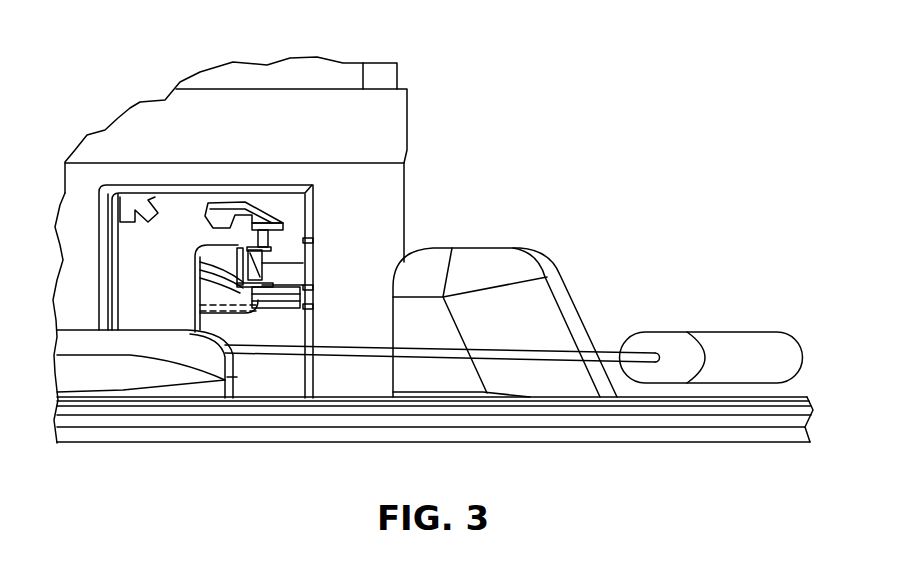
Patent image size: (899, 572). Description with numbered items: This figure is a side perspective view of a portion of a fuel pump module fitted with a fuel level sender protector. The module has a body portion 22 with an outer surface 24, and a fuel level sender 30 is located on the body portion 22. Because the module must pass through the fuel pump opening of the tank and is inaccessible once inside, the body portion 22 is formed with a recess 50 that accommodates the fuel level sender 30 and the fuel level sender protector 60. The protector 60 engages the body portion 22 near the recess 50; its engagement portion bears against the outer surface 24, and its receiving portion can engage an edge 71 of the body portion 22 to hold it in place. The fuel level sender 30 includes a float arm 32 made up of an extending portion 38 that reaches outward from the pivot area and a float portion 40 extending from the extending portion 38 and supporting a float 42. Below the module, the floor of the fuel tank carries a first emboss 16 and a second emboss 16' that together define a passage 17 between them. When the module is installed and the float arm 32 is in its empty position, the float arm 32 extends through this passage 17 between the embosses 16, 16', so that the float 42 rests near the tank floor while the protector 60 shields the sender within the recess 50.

The body portion 22 is at (136, 94).
The edge 71 is at (363, 86).
The outer surface 24 is at (273, 138).
The recess 50 is at (128, 205).
The fuel level sender protector 60 is at (140, 263).
The fuel level sender 30 is at (334, 257).
The passage 17 is at (352, 378).
The first emboss 16 is at (435, 409).
The second emboss 16' is at (524, 311).
The extending portion 38 is at (542, 350).
The float portion 40 is at (642, 357).
The float arm 32 is at (736, 312).
The float 42 is at (772, 348).